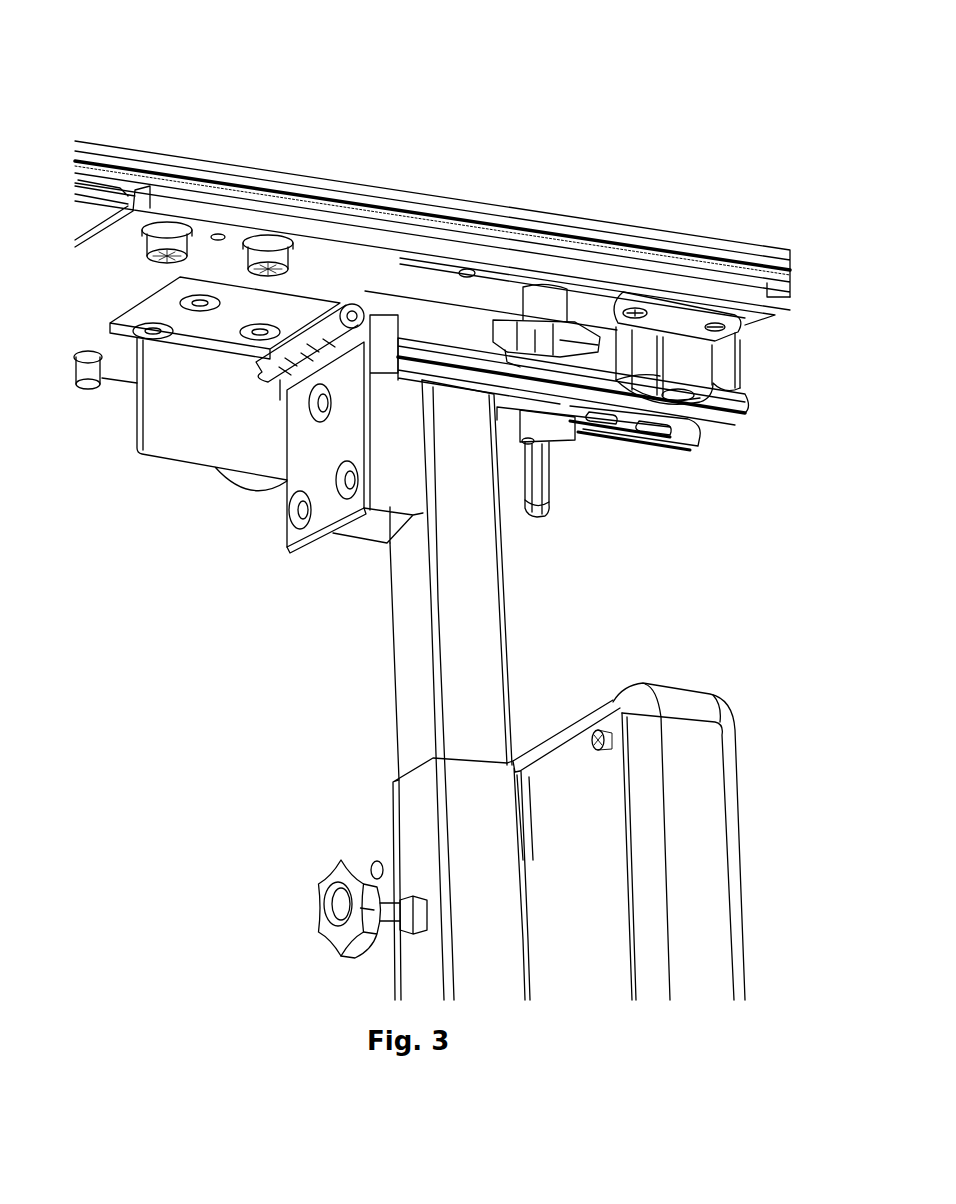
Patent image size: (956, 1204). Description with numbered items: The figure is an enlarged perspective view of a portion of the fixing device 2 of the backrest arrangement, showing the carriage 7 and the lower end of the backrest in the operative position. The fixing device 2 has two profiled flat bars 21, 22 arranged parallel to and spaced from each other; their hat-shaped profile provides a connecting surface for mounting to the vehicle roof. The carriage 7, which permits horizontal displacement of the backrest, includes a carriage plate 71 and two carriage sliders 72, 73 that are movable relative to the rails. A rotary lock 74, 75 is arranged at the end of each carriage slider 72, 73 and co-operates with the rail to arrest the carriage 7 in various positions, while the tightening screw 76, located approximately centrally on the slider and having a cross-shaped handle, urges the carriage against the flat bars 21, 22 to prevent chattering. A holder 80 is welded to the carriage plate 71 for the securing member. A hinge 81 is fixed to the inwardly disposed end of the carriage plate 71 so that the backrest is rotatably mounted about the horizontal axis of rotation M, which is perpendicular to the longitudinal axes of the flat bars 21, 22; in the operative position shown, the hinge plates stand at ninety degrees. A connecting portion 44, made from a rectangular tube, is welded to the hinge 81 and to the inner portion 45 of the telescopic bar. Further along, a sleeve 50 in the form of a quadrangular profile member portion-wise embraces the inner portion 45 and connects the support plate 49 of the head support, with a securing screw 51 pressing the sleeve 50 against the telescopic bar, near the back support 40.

The fixing device 2 is at (434, 159).
The carriage 7 is at (680, 477).
The flat bar 21 is at (623, 427).
The flat bar 22 is at (143, 165).
The back support 40 is at (663, 760).
The connecting portion 44 is at (393, 505).
The inner portion 45 is at (403, 568).
The support plate 49 is at (600, 910).
The sleeve 50 is at (392, 803).
The securing screw 51 is at (337, 911).
The carriage plate 71 is at (332, 257).
The carriage slider 72 is at (222, 208).
The carriage slider 73 is at (563, 408).
The rotary lock 74 is at (685, 357).
The rotary lock 75 is at (537, 465).
The tightening screw 76 is at (497, 337).
The holder 80 is at (242, 415).
The hinge 81 is at (320, 453).
The axis of rotation M is at (360, 312).